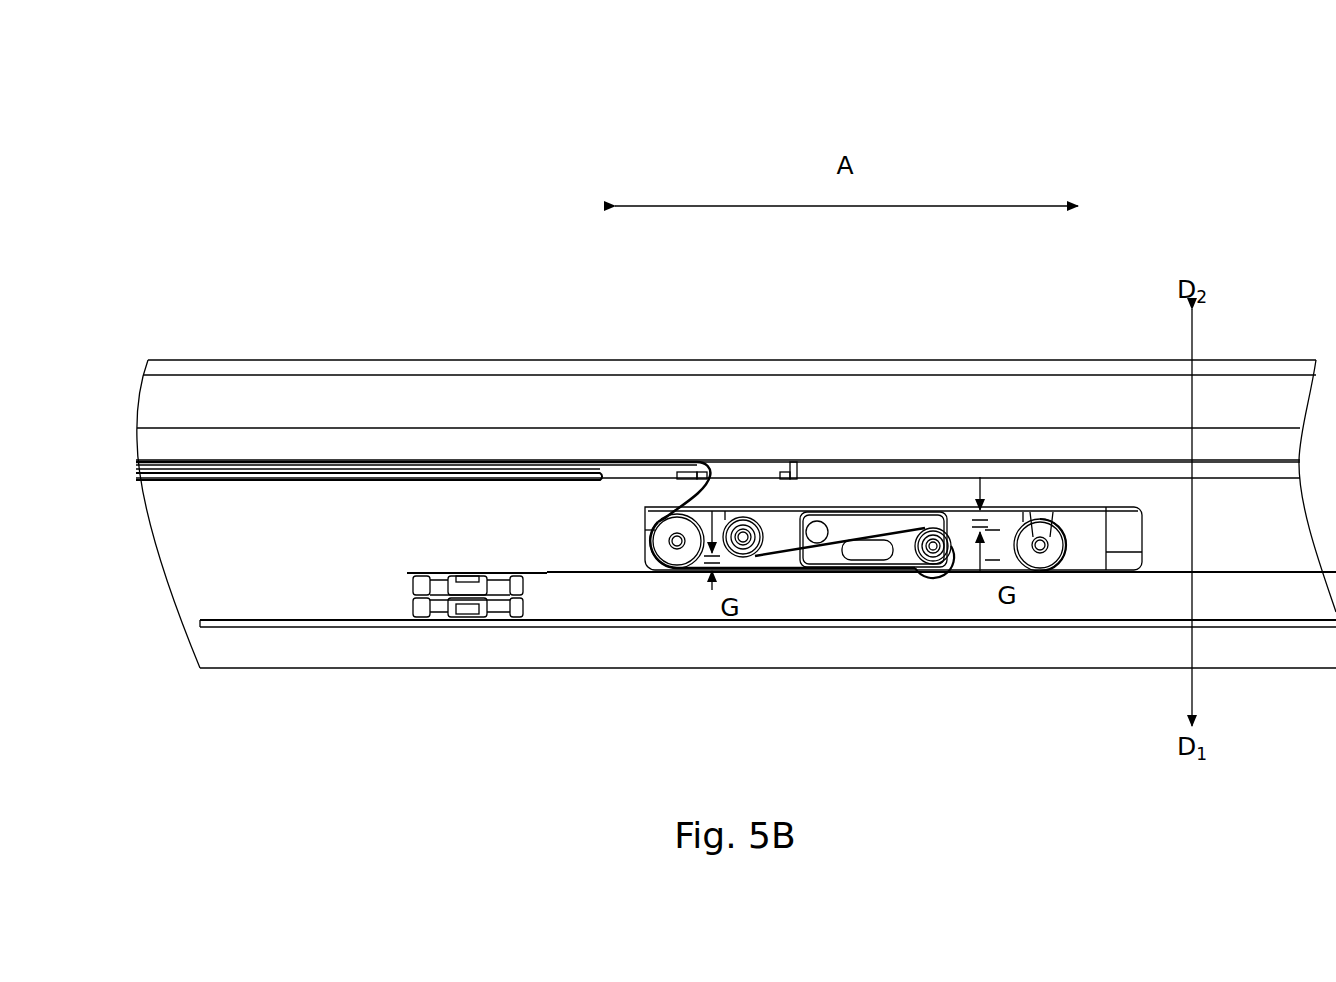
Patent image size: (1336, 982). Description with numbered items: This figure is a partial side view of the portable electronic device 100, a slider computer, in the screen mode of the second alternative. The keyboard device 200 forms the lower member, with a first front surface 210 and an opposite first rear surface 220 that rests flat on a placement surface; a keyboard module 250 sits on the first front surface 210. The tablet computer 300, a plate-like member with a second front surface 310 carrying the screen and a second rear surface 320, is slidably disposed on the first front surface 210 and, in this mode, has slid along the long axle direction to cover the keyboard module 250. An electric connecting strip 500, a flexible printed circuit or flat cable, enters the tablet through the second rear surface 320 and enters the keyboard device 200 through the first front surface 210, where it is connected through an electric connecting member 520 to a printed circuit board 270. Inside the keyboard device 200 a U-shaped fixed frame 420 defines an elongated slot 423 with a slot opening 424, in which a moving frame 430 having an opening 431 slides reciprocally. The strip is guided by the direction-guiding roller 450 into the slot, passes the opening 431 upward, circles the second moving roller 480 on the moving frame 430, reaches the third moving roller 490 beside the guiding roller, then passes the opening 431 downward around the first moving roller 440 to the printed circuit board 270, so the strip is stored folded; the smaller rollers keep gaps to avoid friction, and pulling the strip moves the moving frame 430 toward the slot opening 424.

The portable electronic device 100 is at (150, 167).
The keyboard device 200 is at (318, 667).
The first front surface 210 is at (323, 478).
The first rear surface 220 is at (225, 667).
The keyboard module 250 is at (588, 473).
The printed circuit board 270 is at (463, 620).
The tablet computer 300 is at (216, 357).
The second front surface 310 is at (437, 360).
The second rear surface 320 is at (360, 467).
The U-shaped fixed frame 420 is at (1118, 506).
The elongated slot 423 is at (722, 517).
The slot opening 424 is at (652, 535).
The moving frame 430 is at (838, 510).
The opening 431 is at (970, 540).
The first moving roller 440 is at (1043, 556).
The direction-guiding roller 450 is at (675, 555).
The second moving roller 480 is at (929, 553).
The third moving roller 490 is at (746, 548).
The electric connecting strip 500 is at (656, 460).
The electric connecting member 520 is at (498, 605).